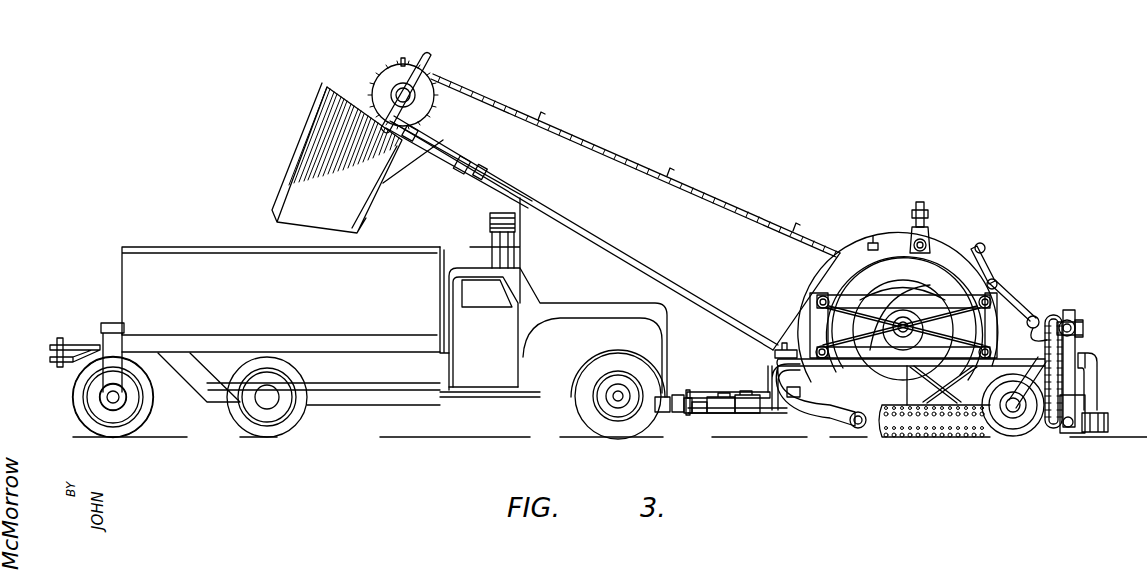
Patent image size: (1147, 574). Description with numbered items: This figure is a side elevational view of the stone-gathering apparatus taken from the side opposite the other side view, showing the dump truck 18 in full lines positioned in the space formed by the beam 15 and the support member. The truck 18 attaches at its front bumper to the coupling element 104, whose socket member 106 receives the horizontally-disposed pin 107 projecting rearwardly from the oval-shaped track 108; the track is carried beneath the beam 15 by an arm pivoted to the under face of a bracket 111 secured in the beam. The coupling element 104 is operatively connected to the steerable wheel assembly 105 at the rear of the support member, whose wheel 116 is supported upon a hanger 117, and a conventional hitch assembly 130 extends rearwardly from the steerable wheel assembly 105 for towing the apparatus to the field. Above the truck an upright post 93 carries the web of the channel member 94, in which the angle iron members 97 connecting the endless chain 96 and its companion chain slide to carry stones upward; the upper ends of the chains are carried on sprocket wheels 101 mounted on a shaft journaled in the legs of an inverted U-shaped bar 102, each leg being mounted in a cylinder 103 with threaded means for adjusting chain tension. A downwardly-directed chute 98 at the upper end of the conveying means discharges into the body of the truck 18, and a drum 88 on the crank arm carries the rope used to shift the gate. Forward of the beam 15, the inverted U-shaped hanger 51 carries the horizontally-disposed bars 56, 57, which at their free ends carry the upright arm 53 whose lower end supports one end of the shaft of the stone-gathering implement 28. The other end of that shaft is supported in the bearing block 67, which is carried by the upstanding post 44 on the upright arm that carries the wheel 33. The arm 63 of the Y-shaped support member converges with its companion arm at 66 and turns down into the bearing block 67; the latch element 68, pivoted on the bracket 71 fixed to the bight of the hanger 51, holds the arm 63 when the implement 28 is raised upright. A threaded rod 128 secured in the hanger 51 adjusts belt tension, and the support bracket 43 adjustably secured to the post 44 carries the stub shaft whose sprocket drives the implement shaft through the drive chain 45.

The beam 15 is at (775, 420).
The dump truck 18 is at (554, 296).
The stone-gathering implement 28 is at (945, 440).
The wheel 33 is at (1015, 431).
The support bracket 43 is at (1076, 326).
The upstanding post 44 is at (1076, 343).
The drive chain 45 is at (1032, 320).
The hanger 51 is at (943, 243).
The upright arm 53 is at (837, 393).
The bar 56 is at (843, 298).
The bar 57 is at (837, 348).
The arm 63 is at (878, 362).
The convergence of the arms 66 is at (1096, 363).
The bearing block 67 is at (1097, 406).
The latch element 68 is at (912, 212).
The bracket 71 is at (921, 234).
The drum 88 is at (490, 214).
The upright post 93 is at (521, 252).
The channel member 94 is at (637, 270).
The endless chain 96 is at (737, 205).
The angle iron members 97 is at (667, 175).
The chute 98 is at (362, 203).
The sprocket wheels 101 is at (422, 103).
The inverted U-shaped bar 102 is at (430, 73).
The cylinder 103 is at (450, 163).
The coupling element 104 is at (692, 386).
The steerable wheel assembly 105 is at (100, 331).
The socket member 106 is at (688, 414).
The pin 107 is at (697, 414).
The oval-shaped track 108 is at (703, 418).
The bracket 111 is at (723, 408).
The wheel 116 is at (140, 423).
The hanger 117 is at (117, 375).
The threaded rod 128 is at (872, 243).
The hitch assembly 130 is at (52, 338).